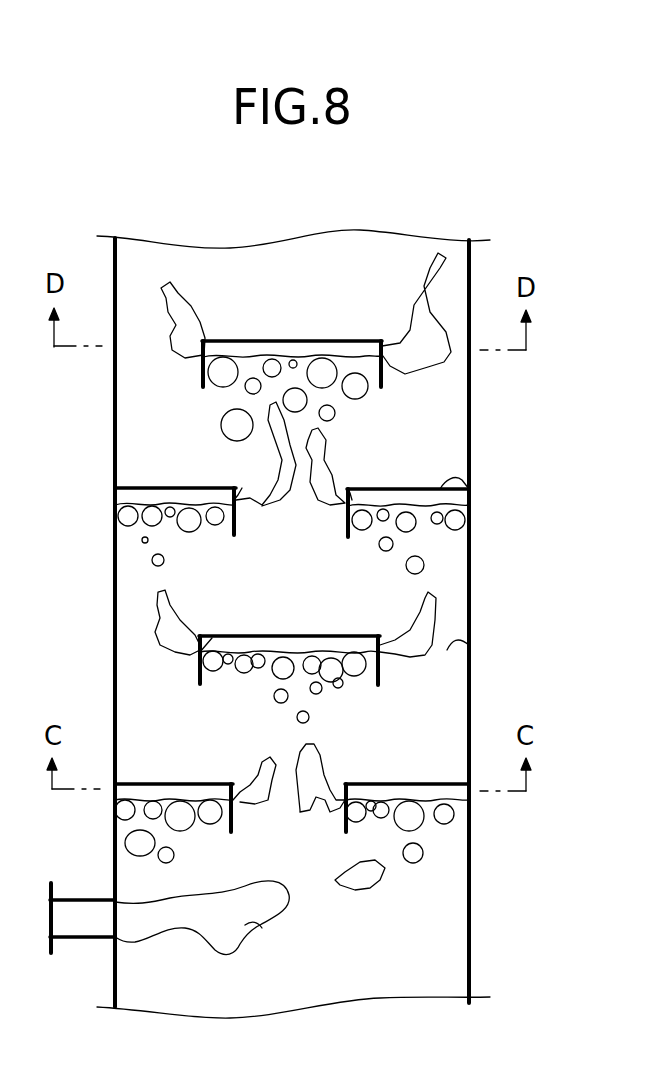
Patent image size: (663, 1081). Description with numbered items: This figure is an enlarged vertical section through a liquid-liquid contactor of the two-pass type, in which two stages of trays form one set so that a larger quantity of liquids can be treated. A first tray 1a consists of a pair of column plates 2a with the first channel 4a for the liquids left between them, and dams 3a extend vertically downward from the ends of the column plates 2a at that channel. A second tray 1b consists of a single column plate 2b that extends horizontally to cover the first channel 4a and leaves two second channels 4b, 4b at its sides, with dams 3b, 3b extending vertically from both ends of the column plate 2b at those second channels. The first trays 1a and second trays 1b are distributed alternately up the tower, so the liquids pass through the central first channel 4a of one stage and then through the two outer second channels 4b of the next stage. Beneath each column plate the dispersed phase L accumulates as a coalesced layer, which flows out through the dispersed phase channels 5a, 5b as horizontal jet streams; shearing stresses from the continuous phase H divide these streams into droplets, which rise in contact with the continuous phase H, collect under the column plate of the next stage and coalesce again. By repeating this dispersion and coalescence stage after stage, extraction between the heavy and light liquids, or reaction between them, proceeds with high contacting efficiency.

The first tray 1a is at (408, 470).
The second tray 1b is at (348, 622).
The column plate 2a is at (152, 484).
The column plate 2b is at (281, 634).
The dam 3a is at (237, 535).
The dam 3b is at (200, 670).
The first channel 4a is at (295, 502).
The second channel 4b is at (135, 648).
The dispersed phase channel 5a is at (232, 500).
The dispersed phase channel 5b is at (200, 652).
The continuous phase H is at (300, 866).
The dispersed phase L is at (247, 923).